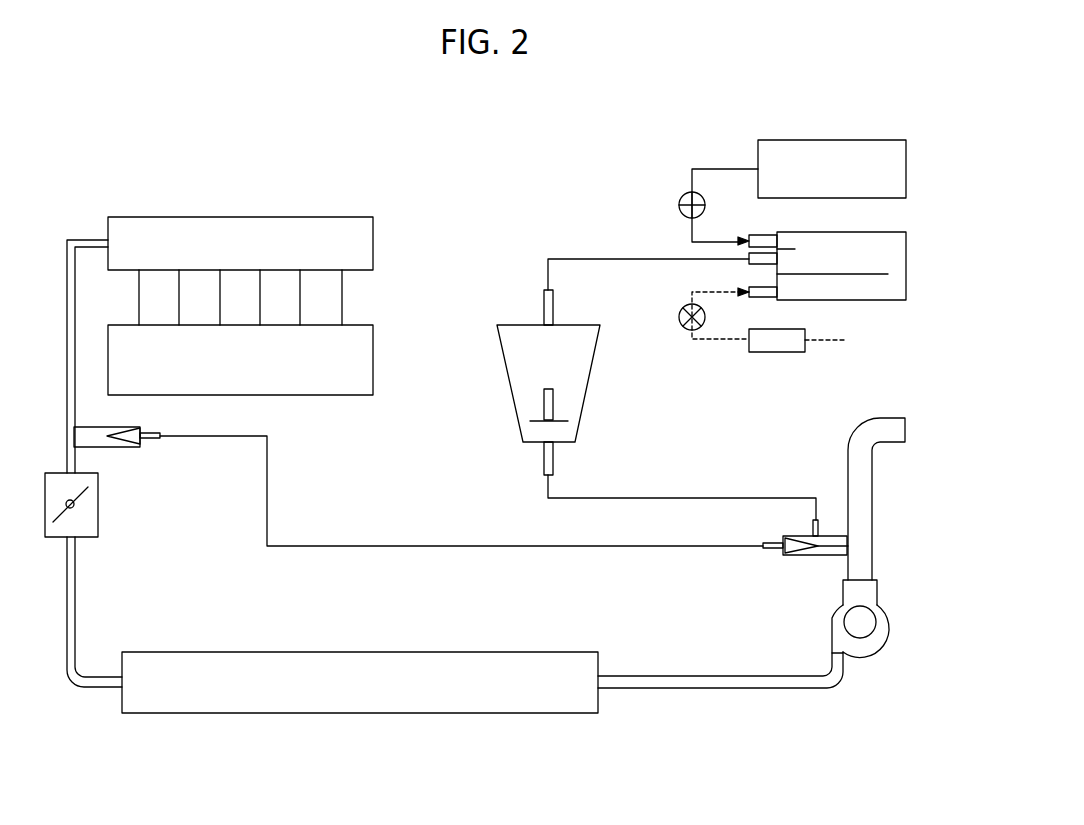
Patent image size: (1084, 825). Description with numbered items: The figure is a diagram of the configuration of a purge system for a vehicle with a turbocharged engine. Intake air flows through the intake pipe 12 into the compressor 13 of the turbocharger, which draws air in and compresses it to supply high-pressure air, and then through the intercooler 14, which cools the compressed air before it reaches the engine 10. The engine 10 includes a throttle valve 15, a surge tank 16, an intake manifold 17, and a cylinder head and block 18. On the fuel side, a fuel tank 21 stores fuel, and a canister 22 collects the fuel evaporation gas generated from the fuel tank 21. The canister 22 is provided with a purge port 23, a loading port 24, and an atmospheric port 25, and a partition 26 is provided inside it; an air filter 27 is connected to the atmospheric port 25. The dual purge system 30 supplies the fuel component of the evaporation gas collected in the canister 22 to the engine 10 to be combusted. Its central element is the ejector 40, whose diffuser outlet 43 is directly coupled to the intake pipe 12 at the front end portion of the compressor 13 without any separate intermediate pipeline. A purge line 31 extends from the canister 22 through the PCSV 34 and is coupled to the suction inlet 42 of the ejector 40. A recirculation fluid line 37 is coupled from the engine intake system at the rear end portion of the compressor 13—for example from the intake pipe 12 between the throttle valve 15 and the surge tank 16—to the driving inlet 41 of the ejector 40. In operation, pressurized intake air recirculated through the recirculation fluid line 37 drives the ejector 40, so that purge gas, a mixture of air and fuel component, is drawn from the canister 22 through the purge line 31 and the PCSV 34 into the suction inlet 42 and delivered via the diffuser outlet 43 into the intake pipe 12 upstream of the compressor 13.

The engine 10 is at (349, 210).
The intake pipe 12 is at (92, 239).
The compressor 13 is at (875, 647).
The intercooler 14 is at (430, 652).
The throttle valve 15 is at (98, 505).
The surge tank 16 is at (373, 237).
The intake manifold 17 is at (342, 296).
The cylinder head and block 18 is at (373, 360).
The fuel tank 21 is at (830, 140).
The canister 22 is at (820, 247).
The purge port 23 is at (752, 235).
The loading port 24 is at (762, 235).
The atmospheric port 25 is at (757, 300).
The partition 26 is at (866, 274).
The air filter 27 is at (780, 353).
The dual purge system 30 is at (690, 556).
The purge line 31 is at (580, 258).
The PCSV 34 is at (593, 362).
The recirculation fluid line 37 is at (325, 546).
The ejector 40 is at (818, 555).
The driving inlet 41 is at (770, 549).
The suction inlet 42 is at (822, 528).
The diffuser outlet 43 is at (850, 545).